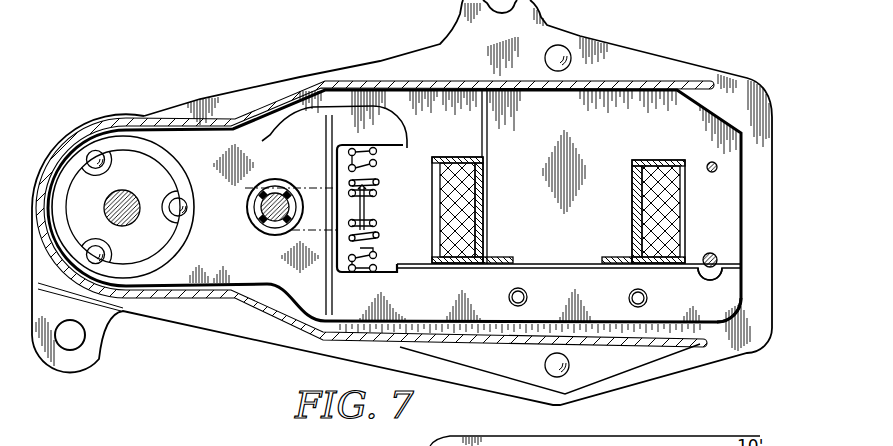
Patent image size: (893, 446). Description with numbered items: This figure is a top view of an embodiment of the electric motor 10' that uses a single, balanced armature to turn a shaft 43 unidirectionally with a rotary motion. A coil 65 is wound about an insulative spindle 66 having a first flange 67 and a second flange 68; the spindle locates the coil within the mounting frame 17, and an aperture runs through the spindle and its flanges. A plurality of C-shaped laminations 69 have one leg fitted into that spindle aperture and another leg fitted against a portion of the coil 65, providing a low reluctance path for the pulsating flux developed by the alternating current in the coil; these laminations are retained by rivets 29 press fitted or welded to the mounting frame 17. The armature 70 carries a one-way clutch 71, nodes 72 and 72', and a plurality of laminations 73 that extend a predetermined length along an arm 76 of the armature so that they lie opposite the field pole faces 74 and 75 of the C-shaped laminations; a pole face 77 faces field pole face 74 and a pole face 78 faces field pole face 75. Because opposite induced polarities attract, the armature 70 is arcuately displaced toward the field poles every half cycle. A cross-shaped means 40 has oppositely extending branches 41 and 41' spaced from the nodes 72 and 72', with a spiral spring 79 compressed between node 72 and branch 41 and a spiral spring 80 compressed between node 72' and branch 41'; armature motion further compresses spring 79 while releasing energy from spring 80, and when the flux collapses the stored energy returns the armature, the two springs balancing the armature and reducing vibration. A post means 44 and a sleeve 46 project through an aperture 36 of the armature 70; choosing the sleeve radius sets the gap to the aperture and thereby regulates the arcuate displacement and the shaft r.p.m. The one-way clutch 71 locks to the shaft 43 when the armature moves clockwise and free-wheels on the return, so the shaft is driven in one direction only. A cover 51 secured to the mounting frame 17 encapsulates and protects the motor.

The modified tool body 10' is at (402, 202).
The mounting frame 17 is at (693, 347).
The rivets 29 is at (711, 256).
The aperture 36 is at (273, 185).
The cross-shaped means 40 is at (367, 211).
The branch 41 is at (377, 226).
The branch 41' is at (380, 196).
The shaft 43 is at (133, 220).
The post means 44 is at (291, 229).
The sleeve 46 is at (251, 207).
The cover 51 is at (690, 84).
The coil 65 is at (688, 205).
The spindle 66 is at (480, 188).
The first flange 67 is at (450, 157).
The second flange 68 is at (455, 263).
The C-shaped laminations 69 is at (630, 123).
The armature 70 is at (297, 313).
The one-way clutch 71 is at (188, 224).
The node 72 is at (377, 259).
The node 72' is at (379, 159).
The laminations 73 is at (688, 308).
The field pole face 74 is at (560, 262).
The field pole face 75 is at (698, 278).
The arm 76 is at (368, 303).
The pole face 77 is at (527, 264).
The pole face 78 is at (717, 304).
The spiral spring 79 is at (380, 237).
The spiral spring 80 is at (379, 183).